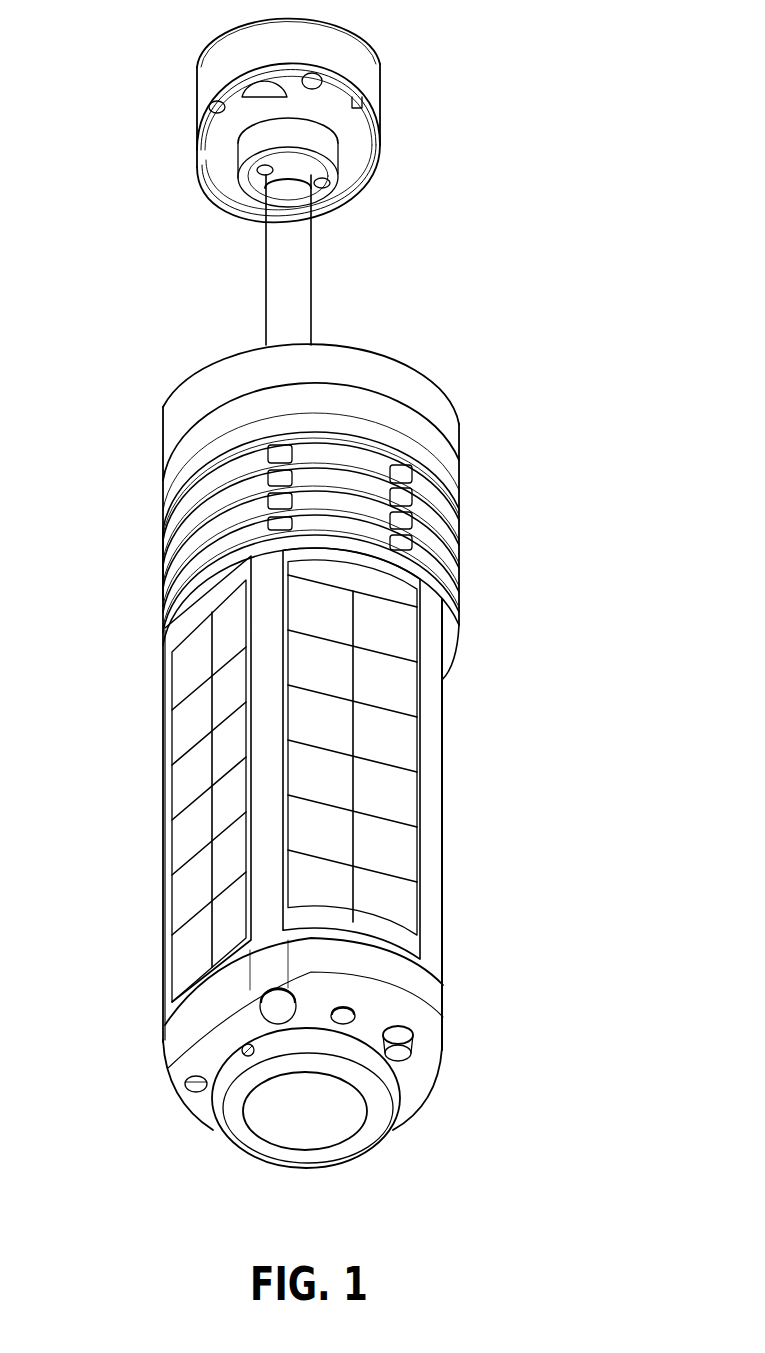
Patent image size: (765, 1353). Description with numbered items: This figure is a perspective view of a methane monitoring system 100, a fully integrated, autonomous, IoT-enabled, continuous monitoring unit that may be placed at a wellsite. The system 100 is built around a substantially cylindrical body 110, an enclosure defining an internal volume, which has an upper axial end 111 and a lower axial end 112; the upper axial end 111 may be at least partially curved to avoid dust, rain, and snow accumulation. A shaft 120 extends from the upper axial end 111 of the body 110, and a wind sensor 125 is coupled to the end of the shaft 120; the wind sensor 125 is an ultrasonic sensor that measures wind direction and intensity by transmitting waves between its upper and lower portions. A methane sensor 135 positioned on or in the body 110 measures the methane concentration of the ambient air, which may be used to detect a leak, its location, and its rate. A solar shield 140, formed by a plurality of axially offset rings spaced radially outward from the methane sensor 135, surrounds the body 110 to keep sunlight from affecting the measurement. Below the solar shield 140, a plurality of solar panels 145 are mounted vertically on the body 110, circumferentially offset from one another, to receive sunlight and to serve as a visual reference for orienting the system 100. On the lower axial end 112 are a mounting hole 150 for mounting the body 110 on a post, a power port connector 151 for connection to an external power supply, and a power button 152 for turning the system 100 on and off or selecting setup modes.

The methane monitoring system 100 is at (176, 24).
The wind sensor 125 is at (380, 68).
The shaft 120 is at (310, 263).
The upper axial end 111 is at (423, 367).
The solar shield 140 is at (463, 470).
The methane sensor 135 is at (156, 549).
The body 110 is at (442, 790).
The solar panels 145 is at (405, 903).
The lower axial end 112 is at (422, 1102).
The mounting hole 150 is at (235, 1123).
The power port connector 151 is at (413, 1048).
The power button 152 is at (265, 1003).